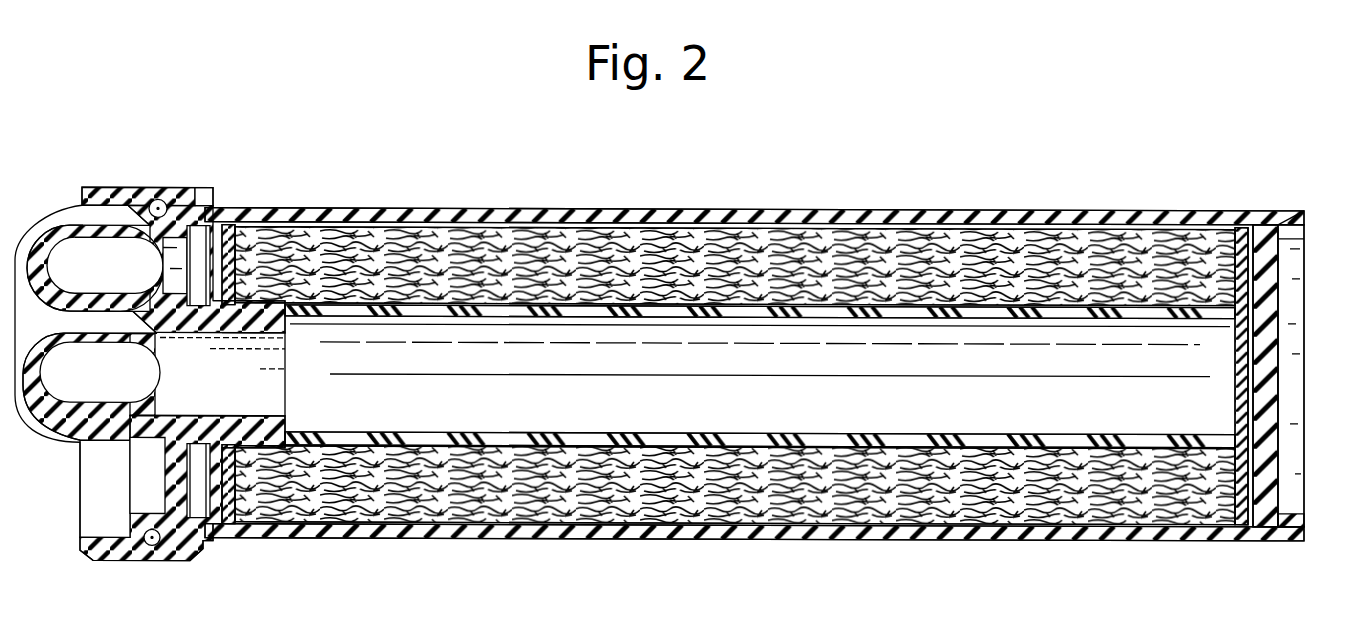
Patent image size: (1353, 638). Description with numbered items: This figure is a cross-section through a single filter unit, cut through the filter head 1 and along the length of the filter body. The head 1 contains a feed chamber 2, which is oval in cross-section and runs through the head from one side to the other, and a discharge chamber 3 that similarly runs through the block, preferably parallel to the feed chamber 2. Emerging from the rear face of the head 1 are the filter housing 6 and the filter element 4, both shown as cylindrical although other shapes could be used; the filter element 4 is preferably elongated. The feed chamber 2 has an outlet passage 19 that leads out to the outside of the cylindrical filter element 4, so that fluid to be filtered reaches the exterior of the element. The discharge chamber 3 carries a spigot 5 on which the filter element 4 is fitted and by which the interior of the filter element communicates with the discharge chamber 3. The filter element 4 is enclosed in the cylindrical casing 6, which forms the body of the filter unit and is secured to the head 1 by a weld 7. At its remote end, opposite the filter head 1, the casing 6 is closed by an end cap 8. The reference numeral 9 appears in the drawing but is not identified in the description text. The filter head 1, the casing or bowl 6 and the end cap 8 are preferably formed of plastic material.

The head 1 is at (142, 342).
The feed chamber 2 is at (65, 257).
The discharge chamber 3 is at (52, 378).
The filter element 4 is at (437, 267).
The spigot 5 is at (275, 322).
The filter housing 6 is at (607, 217).
The weld 7 is at (203, 215).
The cap 8 is at (1268, 368).
The end wall 9 is at (1267, 220).
The outlet passage 19 is at (170, 253).